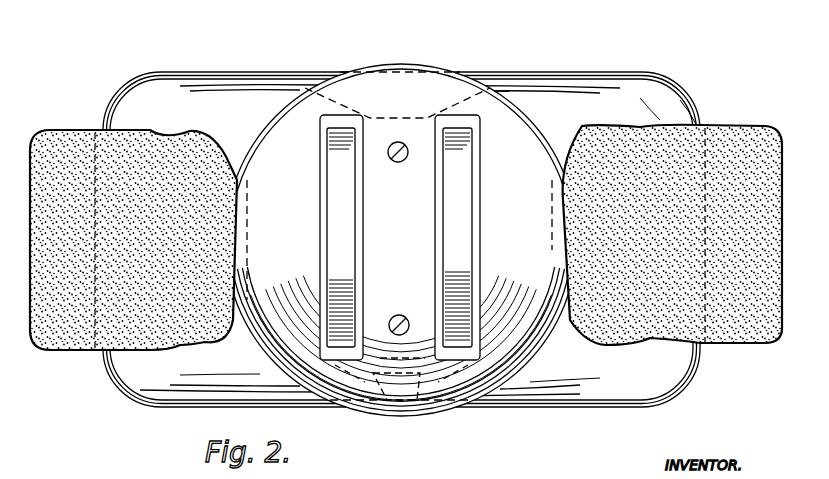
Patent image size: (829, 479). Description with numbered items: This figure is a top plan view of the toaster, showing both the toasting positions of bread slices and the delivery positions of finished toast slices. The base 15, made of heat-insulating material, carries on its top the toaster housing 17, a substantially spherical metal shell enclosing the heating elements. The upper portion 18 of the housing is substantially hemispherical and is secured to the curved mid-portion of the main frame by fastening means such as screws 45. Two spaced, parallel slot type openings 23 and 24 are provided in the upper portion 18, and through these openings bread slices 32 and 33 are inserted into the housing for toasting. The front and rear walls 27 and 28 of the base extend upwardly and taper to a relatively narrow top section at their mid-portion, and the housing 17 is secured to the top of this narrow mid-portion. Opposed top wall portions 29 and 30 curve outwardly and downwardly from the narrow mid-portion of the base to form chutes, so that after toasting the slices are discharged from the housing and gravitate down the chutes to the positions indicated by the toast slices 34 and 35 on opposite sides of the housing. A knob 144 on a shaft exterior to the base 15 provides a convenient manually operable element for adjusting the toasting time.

The base 15 is at (566, 406).
The toaster housing 17 is at (432, 62).
The upper portion 18 is at (270, 124).
The slot type opening 23 is at (324, 133).
The slot type opening 24 is at (440, 205).
The front wall 27 is at (495, 408).
The rear wall 28 is at (494, 78).
The top wall portion 29 is at (260, 93).
The top wall portion 30 is at (560, 80).
The bread slice 32 is at (333, 264).
The bread slice 33 is at (447, 262).
The toast slice 34 is at (58, 138).
The toast slice 35 is at (740, 130).
The screws 45 is at (394, 163).
The knob 144 is at (380, 412).